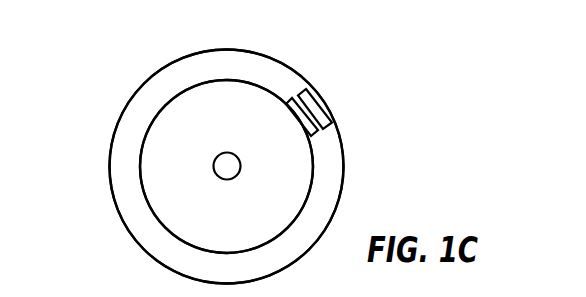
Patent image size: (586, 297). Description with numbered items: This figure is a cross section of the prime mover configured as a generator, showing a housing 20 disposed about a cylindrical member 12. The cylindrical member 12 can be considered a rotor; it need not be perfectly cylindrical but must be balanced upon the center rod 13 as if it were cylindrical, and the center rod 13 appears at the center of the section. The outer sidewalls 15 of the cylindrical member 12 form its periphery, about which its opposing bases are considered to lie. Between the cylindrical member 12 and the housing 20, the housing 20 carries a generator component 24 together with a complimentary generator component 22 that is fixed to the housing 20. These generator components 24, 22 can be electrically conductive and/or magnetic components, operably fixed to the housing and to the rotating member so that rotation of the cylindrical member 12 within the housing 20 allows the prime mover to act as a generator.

The housing 20 is at (250, 50).
The outer sidewalls 15 is at (267, 87).
The cylindrical member 12 is at (168, 180).
The center rod 13 is at (226, 163).
The generator component 24 is at (325, 111).
The complimentary generator component 22 is at (311, 129).